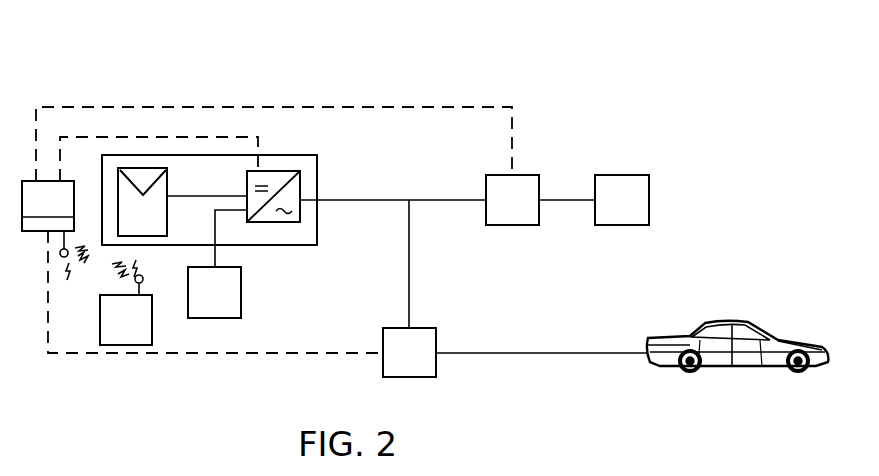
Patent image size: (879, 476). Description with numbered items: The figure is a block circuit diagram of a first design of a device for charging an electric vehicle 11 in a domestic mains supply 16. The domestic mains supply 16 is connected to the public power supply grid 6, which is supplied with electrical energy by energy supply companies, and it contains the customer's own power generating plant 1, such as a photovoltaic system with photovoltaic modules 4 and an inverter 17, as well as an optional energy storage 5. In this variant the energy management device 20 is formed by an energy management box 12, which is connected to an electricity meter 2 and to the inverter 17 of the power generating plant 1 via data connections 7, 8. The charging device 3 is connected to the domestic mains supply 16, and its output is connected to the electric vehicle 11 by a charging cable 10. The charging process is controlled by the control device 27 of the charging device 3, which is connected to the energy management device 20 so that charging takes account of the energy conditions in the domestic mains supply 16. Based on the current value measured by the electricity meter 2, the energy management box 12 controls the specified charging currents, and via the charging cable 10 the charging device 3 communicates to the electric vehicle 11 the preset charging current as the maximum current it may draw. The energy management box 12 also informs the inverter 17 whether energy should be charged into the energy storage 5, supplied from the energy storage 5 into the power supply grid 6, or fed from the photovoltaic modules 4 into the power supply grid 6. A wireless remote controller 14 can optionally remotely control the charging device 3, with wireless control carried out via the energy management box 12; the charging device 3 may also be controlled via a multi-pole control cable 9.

The power generating plant 1 is at (192, 155).
The electricity meter 2 is at (512, 200).
The charging device 3 is at (409, 352).
The photovoltaic modules 4 is at (135, 165).
The energy storage 5 is at (214, 292).
The power supply grid 6 is at (622, 200).
The data connection 7 is at (284, 115).
The data connection 8 is at (150, 137).
The multi-pole control cable 9 is at (152, 353).
The charging cable 10 is at (574, 353).
The electric vehicle 11 is at (730, 320).
The energy management box 12 is at (55, 230).
The wireless remote controller 14 is at (126, 302).
The domestic mains supply 16 is at (355, 148).
The inverter 17 is at (275, 107).
The energy management device 20 is at (55, 230).
The control device 27 is at (409, 352).